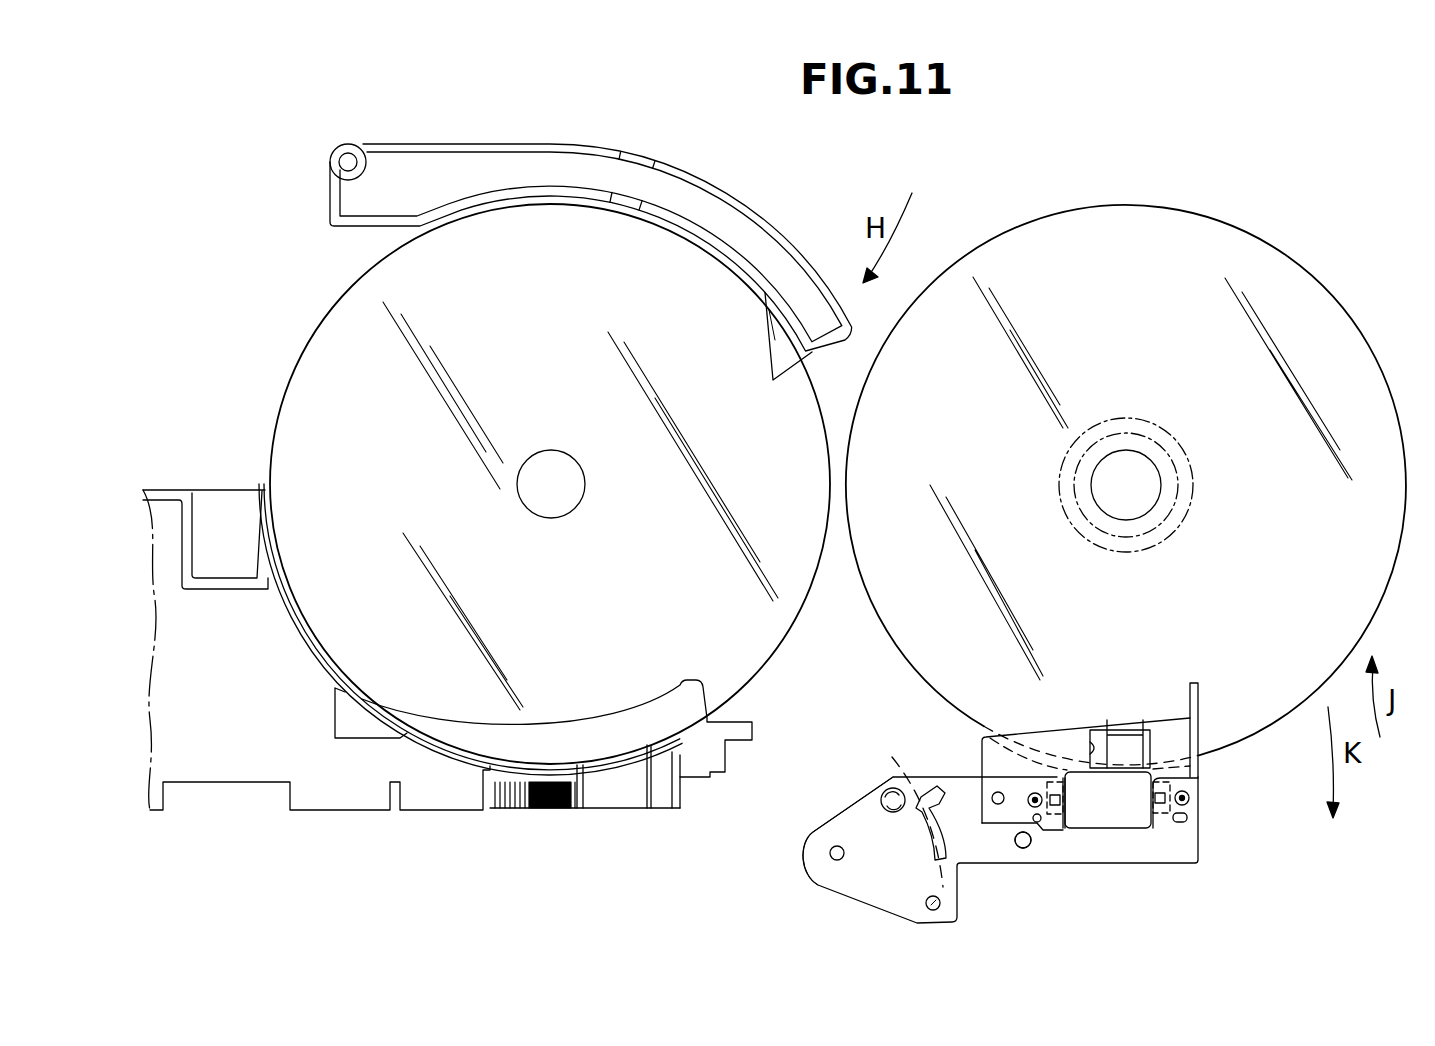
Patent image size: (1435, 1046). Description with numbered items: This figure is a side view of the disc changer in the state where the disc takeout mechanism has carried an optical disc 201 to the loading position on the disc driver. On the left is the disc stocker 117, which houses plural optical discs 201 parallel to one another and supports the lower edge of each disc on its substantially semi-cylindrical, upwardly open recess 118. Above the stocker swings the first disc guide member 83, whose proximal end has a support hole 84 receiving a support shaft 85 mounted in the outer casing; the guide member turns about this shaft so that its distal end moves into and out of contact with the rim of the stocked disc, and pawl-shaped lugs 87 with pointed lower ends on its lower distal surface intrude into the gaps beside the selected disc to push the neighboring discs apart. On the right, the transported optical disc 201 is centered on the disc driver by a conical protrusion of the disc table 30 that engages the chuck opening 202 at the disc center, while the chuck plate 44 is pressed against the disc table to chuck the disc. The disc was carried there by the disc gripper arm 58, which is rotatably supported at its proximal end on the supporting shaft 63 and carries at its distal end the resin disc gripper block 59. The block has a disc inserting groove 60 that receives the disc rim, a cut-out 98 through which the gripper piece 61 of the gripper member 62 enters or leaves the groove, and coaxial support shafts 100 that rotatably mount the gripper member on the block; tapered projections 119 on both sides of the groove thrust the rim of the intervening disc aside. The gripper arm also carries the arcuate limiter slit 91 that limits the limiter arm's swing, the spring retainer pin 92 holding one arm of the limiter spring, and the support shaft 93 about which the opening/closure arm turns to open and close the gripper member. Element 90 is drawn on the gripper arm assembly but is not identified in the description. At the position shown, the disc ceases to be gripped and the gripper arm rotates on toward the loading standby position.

The optical disc 201 is at (308, 402).
The chuck opening 202 is at (490, 490).
The disc table 30 is at (1146, 523).
The chuck plate 44 is at (1118, 540).
The disc gripper arm 58 is at (1190, 845).
The disc gripper block 59 is at (1183, 738).
The disc inserting groove 60 is at (1023, 747).
The gripper piece 61 is at (1125, 742).
The gripper member 62 is at (1121, 812).
The supporting shaft 63 is at (830, 855).
The first disc guide member 83 is at (508, 160).
The support hole 84 is at (340, 154).
The support shaft 85 is at (357, 154).
The lug 87 is at (770, 349).
The lever 90 is at (830, 845).
The arcuate limiter slit 91 is at (928, 817).
The spring retainer pin 92 is at (882, 801).
The support shaft 93 is at (1021, 850).
The cut-out 98 is at (1090, 745).
The support shaft 100 is at (1056, 810).
The disc stocker 117 is at (334, 792).
The recess 118 is at (288, 588).
The projection 119 is at (1197, 717).